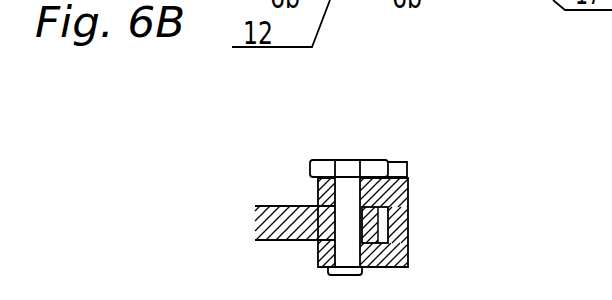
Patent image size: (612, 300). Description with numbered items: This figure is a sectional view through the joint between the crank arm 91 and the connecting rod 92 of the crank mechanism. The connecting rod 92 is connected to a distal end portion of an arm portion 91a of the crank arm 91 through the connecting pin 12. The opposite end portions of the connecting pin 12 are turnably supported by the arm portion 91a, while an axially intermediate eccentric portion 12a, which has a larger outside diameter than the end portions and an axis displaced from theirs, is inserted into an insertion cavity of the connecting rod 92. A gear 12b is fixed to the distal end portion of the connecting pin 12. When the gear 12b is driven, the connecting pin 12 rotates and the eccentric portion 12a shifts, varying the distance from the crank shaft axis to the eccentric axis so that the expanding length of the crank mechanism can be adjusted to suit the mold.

The connecting pin 12 is at (347, 170).
The eccentric portion 12a is at (358, 229).
The gear 12b is at (308, 158).
The crank arm 91 is at (440, 269).
The arm portion 91a is at (405, 177).
The connecting rod 92 is at (253, 205).